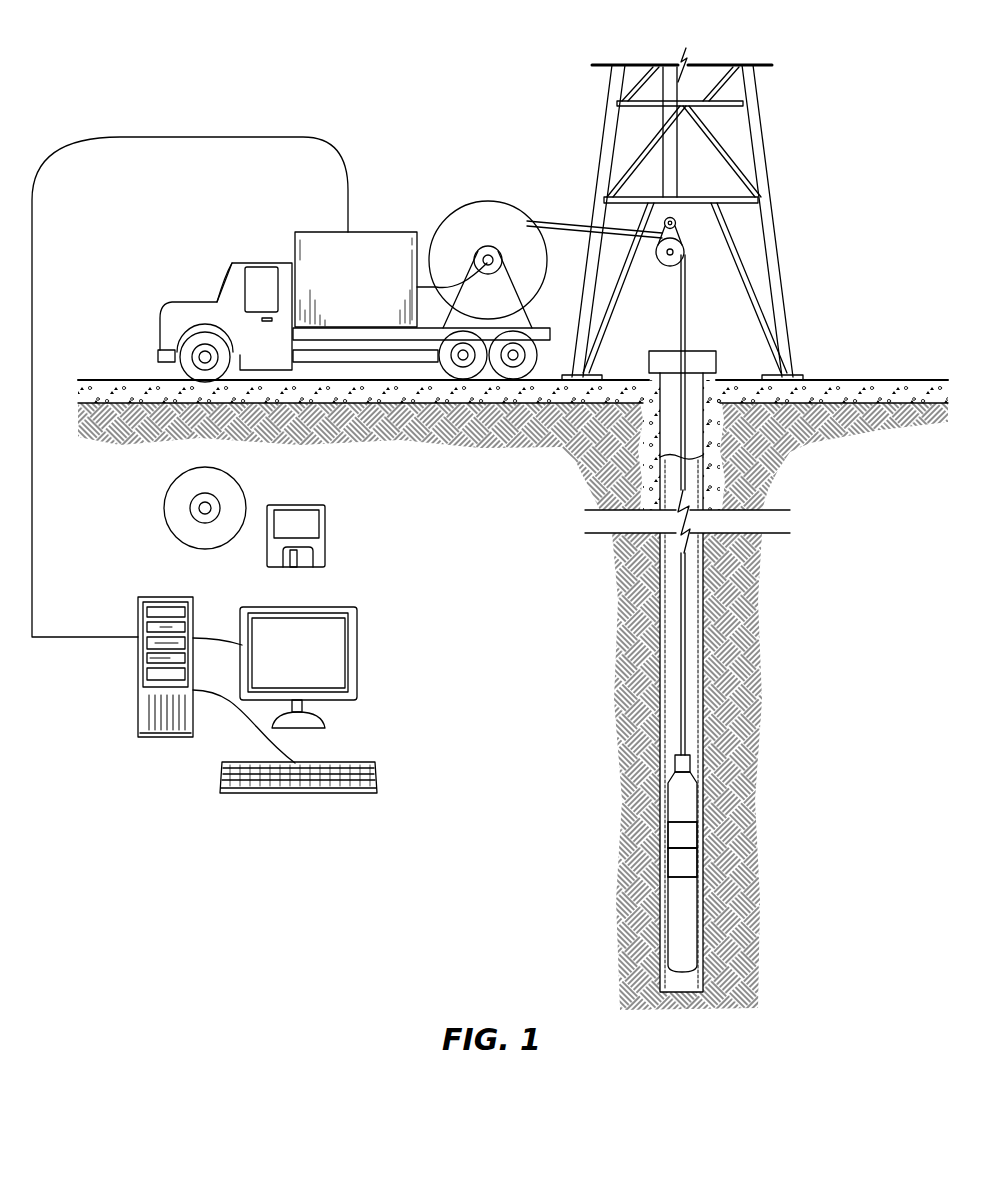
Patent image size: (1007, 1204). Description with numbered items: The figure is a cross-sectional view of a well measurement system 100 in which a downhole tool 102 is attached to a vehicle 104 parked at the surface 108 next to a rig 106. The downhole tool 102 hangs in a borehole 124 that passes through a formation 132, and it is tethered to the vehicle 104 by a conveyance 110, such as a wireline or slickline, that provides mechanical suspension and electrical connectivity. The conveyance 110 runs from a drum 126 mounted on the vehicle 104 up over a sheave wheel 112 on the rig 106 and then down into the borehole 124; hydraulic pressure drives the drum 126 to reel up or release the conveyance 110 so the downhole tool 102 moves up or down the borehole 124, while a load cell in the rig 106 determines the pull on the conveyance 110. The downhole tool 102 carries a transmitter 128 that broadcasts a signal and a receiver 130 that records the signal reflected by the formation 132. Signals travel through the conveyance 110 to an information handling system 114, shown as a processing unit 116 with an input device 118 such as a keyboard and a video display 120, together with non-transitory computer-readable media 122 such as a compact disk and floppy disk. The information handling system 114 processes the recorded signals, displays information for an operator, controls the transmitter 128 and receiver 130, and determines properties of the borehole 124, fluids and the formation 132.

The well measurement system 100 is at (158, 58).
The downhole tool 102 is at (648, 832).
The vehicle 104 is at (367, 232).
The rig 106 is at (775, 215).
The surface 108 is at (838, 380).
The conveyance 110 is at (680, 627).
The sheave wheel 112 is at (668, 270).
The information handling system 114 is at (158, 822).
The processing unit 116 is at (165, 597).
The input device 118 is at (377, 775).
The video display 120 is at (297, 607).
The non-transitory computer-readable media 122 is at (230, 470).
The borehole 124 is at (782, 490).
The drum 126 is at (487, 200).
The transmitter 128 is at (688, 833).
The receiver 130 is at (688, 862).
The formation 132 is at (874, 618).